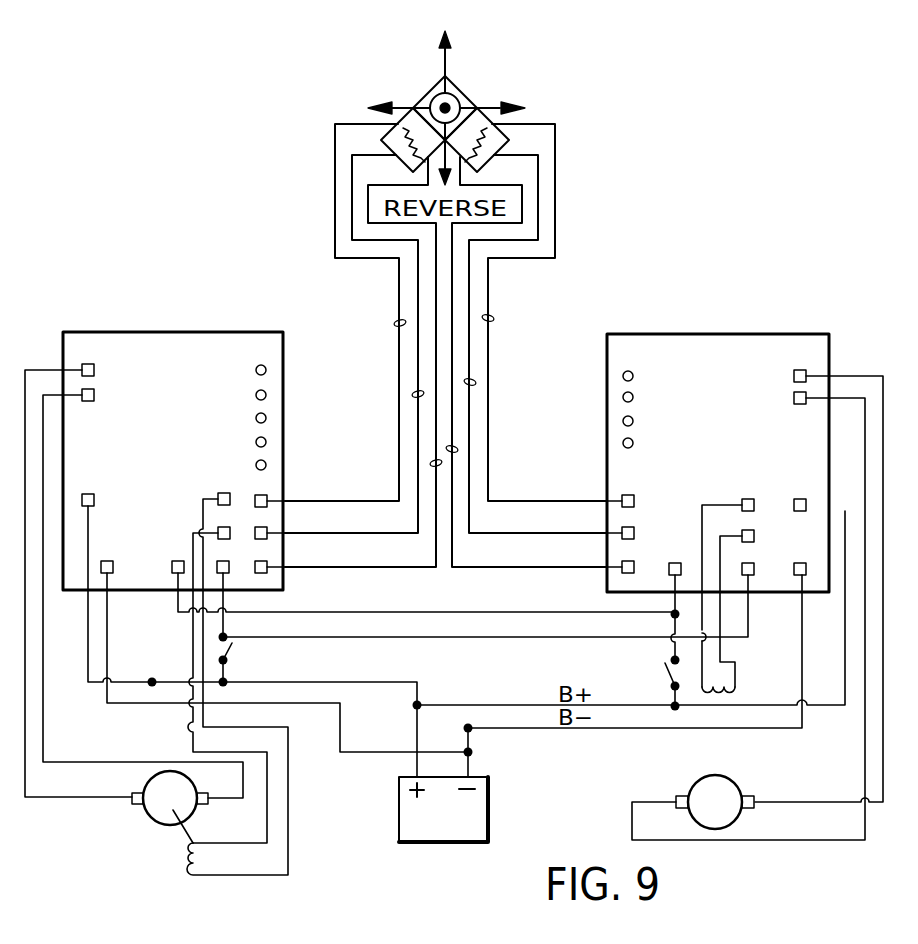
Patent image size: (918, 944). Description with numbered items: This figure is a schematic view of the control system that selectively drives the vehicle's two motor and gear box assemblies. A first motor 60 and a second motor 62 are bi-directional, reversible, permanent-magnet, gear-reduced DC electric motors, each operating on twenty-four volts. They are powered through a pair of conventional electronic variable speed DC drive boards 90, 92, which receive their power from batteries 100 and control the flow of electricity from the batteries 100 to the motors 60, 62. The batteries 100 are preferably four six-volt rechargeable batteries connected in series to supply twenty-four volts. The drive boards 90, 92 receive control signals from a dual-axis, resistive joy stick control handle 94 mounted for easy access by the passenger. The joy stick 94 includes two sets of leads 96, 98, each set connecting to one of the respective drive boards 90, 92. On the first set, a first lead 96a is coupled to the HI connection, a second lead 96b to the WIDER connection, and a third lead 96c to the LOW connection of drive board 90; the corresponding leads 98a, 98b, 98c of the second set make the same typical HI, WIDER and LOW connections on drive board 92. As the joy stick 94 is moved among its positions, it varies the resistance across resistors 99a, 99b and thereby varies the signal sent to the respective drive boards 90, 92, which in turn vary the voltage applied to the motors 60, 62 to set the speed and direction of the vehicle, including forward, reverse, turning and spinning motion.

The first motor 60 is at (152, 822).
The second motor 62 is at (718, 812).
The drive board 90 is at (168, 332).
The drive board 92 is at (725, 334).
The joy stick control handle 94 is at (452, 100).
The set of leads 96 is at (302, 200).
The first lead 96a is at (394, 321).
The second lead 96b is at (412, 393).
The third lead 96c is at (430, 462).
The set of leads 98 is at (600, 189).
The first lead 98a is at (494, 317).
The second lead 98b is at (476, 381).
The third lead 98c is at (458, 448).
The resistor 99a is at (402, 140).
The resistor 99b is at (487, 142).
The batteries 100 is at (443, 832).